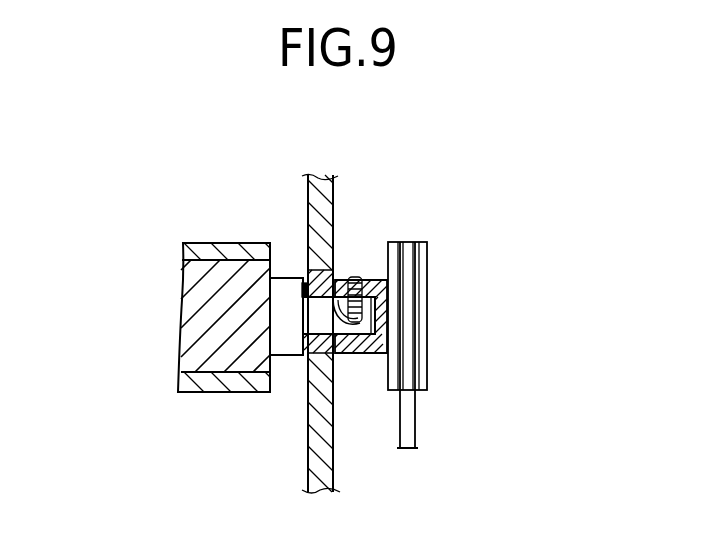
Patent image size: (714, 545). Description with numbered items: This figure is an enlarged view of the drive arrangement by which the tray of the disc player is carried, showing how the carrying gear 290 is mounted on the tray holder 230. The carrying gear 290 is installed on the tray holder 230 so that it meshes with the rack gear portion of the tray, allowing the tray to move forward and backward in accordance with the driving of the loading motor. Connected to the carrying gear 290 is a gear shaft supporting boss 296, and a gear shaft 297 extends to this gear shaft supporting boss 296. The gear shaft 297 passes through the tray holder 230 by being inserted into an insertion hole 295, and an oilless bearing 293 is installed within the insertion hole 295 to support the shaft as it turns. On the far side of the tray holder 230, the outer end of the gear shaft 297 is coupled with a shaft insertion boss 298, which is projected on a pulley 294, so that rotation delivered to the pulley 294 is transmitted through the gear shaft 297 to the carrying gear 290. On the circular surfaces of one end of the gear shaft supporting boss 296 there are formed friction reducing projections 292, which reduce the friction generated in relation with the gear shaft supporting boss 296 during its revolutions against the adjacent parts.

The tray holder 230 is at (307, 193).
The carrying gear 290 is at (190, 243).
The friction reducing projections 292 is at (303, 277).
The oilless bearing 293 is at (298, 481).
The pulley 294 is at (428, 320).
The insertion hole 295 is at (334, 354).
The gear shaft supporting boss 296 is at (290, 355).
The gear shaft 297 is at (318, 312).
The shaft insertion boss 298 is at (373, 279).